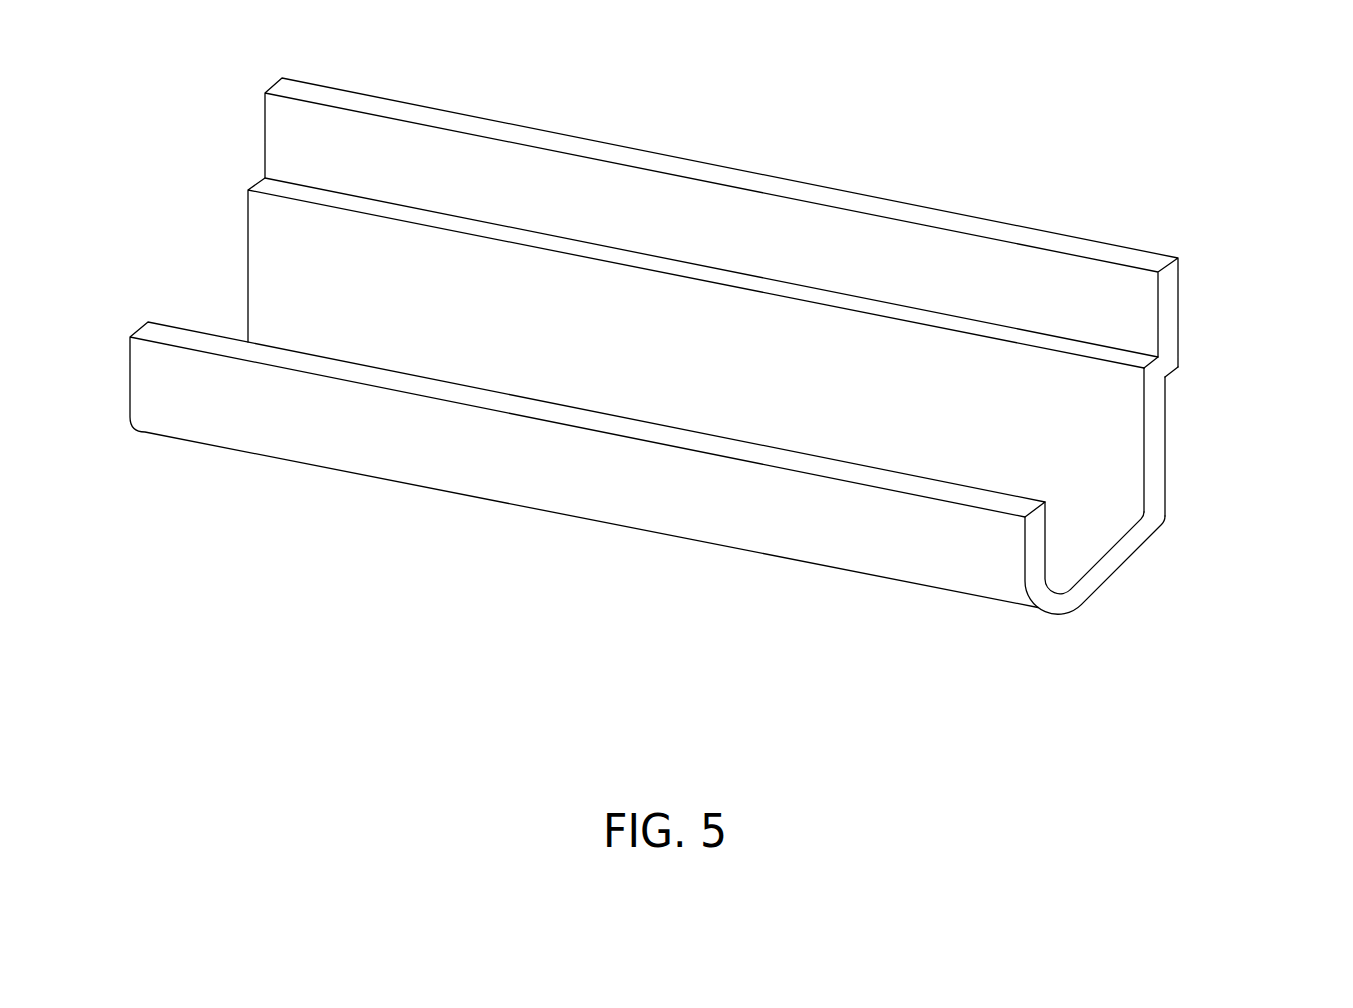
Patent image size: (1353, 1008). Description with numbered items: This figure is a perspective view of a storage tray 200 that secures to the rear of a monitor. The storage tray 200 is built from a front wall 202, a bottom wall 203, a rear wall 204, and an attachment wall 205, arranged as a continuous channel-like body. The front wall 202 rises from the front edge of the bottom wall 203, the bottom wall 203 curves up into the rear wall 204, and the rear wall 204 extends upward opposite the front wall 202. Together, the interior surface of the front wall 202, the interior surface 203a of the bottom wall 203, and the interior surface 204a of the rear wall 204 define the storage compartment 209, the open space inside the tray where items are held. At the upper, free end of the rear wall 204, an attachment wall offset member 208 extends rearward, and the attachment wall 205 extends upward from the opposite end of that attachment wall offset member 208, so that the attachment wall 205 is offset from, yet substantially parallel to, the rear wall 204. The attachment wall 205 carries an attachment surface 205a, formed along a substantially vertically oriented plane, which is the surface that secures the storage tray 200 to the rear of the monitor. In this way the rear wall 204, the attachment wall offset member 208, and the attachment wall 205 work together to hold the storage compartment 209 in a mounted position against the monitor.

The storage tray 200 is at (702, 370).
The front wall 202 is at (537, 433).
The bottom wall 203 is at (1117, 579).
The interior surface of the bottom wall 203a is at (1076, 539).
The rear wall 204 is at (1163, 446).
The interior surface of the rear wall 204a is at (1112, 449).
The attachment wall 205 is at (668, 170).
The attachment surface 205a is at (1117, 304).
The attachment wall offset member 208 is at (1165, 372).
The storage compartment 209 is at (283, 328).